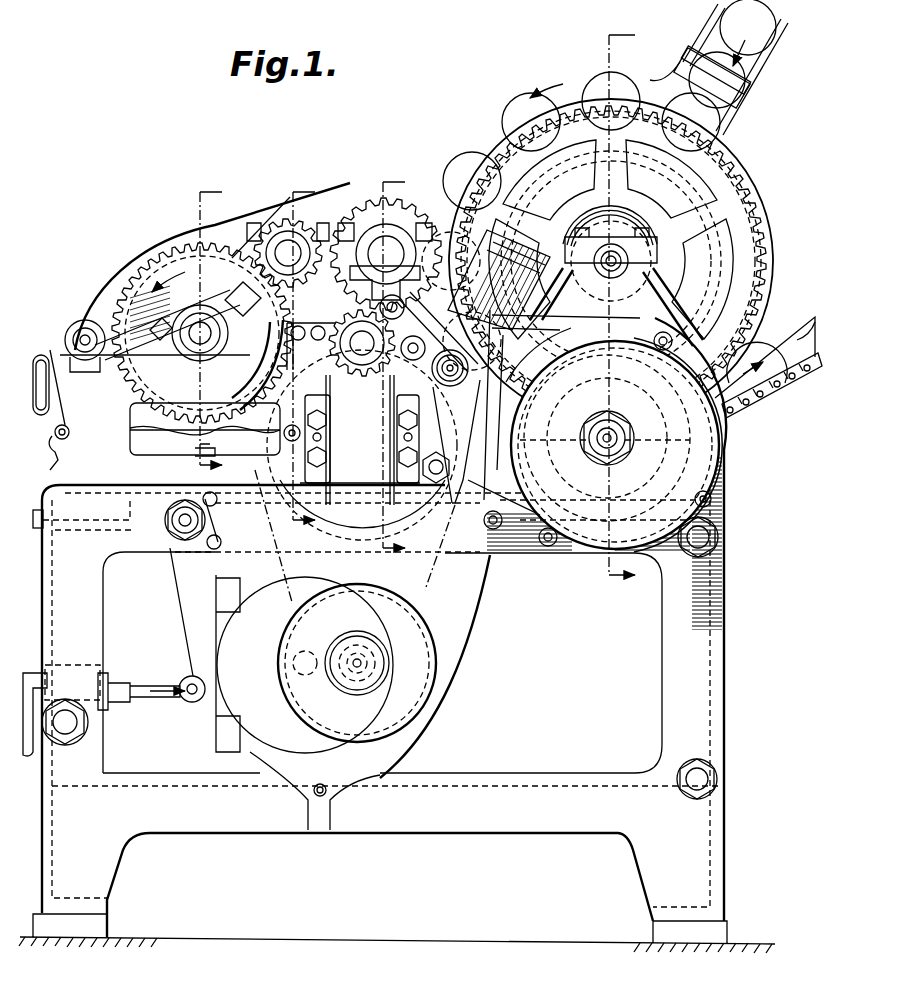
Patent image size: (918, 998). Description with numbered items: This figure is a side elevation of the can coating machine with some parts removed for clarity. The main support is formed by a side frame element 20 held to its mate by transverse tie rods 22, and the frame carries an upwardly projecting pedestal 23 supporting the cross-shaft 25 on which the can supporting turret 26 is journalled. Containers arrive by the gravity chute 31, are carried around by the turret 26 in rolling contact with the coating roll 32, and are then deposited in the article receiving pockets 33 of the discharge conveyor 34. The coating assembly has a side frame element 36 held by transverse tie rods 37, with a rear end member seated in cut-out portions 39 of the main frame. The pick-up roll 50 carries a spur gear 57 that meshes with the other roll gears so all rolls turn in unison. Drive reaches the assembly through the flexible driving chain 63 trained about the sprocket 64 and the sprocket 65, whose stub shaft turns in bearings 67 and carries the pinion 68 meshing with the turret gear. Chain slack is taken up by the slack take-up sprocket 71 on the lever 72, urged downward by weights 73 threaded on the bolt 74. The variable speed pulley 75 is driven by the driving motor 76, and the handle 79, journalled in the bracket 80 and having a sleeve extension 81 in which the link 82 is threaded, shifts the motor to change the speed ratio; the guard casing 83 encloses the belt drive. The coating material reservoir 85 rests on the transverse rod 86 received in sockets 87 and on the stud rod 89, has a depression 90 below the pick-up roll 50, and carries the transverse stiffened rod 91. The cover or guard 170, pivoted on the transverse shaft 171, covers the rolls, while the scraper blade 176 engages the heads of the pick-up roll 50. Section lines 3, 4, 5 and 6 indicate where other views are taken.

The side frame element 20 is at (722, 682).
The transverse tie rods 22 is at (712, 778).
The pedestal 23 is at (640, 330).
The cross-shaft 25 is at (654, 250).
The can supporting turret 26 is at (752, 163).
The gravity chute 31 is at (760, 80).
The coating roll 32 is at (456, 236).
The article receiving pockets 33 is at (778, 334).
The discharge conveyor 34 is at (772, 390).
The side frame element 36 is at (96, 470).
The transverse tie rods 37 is at (455, 402).
The cut-out portions 39 is at (94, 510).
The pick-up roll 50 is at (130, 268).
The spur gear 57 is at (240, 232).
The flexible driving chain 63 is at (607, 408).
The sprocket 64 is at (340, 322).
The sprocket 65 is at (724, 472).
The bearings 67 is at (41, 385).
The pinion 68 is at (423, 439).
The slack take-up sprocket 71 is at (450, 386).
The lever 72 is at (406, 320).
The weights 73 is at (499, 280).
The bolt 74 is at (540, 250).
The pulley 75 is at (430, 665).
The driving motor 76 is at (178, 522).
The handle 79 is at (35, 668).
The bracket 80 is at (100, 656).
The sleeve extension 81 is at (114, 676).
The link 82 is at (148, 686).
The guard casing 83 is at (470, 604).
The coating material reservoir 85 is at (152, 424).
The transverse rod 86 is at (70, 430).
The sockets 87 is at (56, 445).
The stud rod 89 is at (288, 428).
The depression 90 is at (226, 430).
The transverse stiffened rod 91 is at (356, 442).
The cover or guard 170 is at (217, 238).
The transverse shaft 171 is at (78, 320).
The scraper blade 176 is at (262, 352).
The section line 3 is at (403, 365).
The section line 4 is at (304, 360).
The section line 5 is at (220, 329).
The section line 6 is at (633, 307).